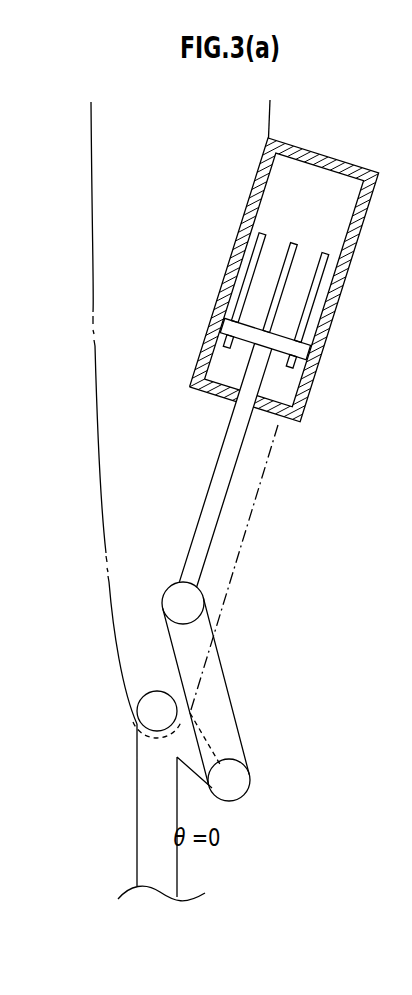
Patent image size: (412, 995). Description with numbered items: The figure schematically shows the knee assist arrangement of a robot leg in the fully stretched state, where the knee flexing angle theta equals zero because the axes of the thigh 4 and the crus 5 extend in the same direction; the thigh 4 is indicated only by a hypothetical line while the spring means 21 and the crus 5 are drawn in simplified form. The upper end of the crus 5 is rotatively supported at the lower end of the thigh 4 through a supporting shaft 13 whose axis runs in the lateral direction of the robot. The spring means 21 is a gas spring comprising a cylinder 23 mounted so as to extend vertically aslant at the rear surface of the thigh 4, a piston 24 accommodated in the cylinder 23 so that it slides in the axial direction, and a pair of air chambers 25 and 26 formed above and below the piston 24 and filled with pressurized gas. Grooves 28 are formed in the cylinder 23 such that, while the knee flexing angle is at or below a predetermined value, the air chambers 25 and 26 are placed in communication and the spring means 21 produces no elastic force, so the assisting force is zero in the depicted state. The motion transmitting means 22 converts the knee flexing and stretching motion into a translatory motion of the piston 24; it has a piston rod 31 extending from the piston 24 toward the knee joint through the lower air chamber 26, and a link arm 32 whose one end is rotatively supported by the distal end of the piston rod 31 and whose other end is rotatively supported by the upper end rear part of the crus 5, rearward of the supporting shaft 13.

The thigh 4 is at (97, 412).
The crus 5 is at (137, 820).
The supporting shaft 13 is at (148, 700).
The spring means 21 is at (346, 317).
The motion transmitting means 22 is at (238, 660).
The cylinder 23 is at (307, 147).
The piston 24 is at (290, 346).
The upper air chamber 25 is at (344, 208).
The lower air chamber 26 is at (273, 393).
The grooves 28 is at (259, 243).
The piston rod 31 is at (217, 512).
The link arm 32 is at (230, 718).